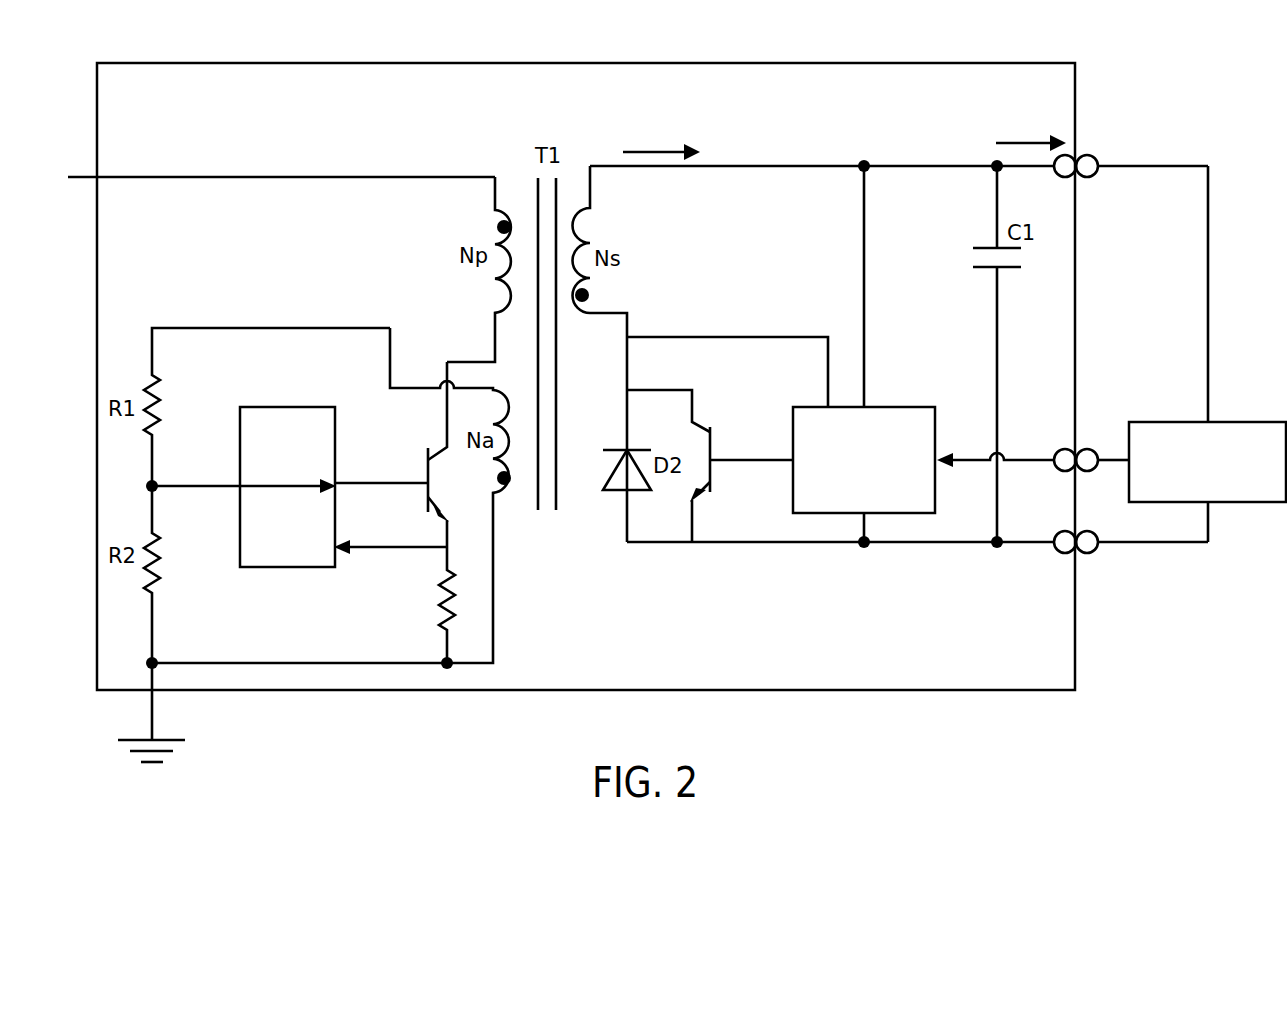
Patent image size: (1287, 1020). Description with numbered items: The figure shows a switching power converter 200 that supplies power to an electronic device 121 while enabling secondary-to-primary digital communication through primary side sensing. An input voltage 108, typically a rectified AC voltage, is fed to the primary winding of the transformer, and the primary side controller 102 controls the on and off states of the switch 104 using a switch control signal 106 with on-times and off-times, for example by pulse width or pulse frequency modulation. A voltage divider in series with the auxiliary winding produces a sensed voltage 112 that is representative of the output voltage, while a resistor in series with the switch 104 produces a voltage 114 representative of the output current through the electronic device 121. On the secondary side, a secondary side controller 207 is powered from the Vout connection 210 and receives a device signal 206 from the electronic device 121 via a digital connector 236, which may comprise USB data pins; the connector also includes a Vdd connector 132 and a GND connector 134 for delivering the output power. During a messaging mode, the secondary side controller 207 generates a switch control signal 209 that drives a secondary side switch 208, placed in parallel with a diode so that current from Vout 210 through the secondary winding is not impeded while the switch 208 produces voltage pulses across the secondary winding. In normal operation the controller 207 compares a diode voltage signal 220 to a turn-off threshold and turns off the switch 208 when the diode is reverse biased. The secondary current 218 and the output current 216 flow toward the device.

The switching power converter 200 is at (147, 99).
The input voltage 108 is at (89, 176).
The sensed voltage 112 is at (190, 486).
The primary side controller 102 is at (268, 542).
The switch control signal 106 is at (358, 483).
The switch 104 is at (425, 463).
The current sense voltage 114 is at (391, 547).
The secondary current ISEC 218 is at (670, 141).
The Vout connection 210 is at (930, 142).
The output current Iout 216 is at (1042, 134).
The Vdd connector 132 is at (1158, 144).
The diode voltage signal 220 is at (726, 337).
The secondary side switch 208 is at (735, 425).
The switch control signal 209 is at (756, 460).
The secondary side controller 207 is at (845, 502).
The device signal 206 is at (1010, 454).
The digital connector 236 is at (1090, 446).
The electronic device 121 is at (1190, 490).
The GND connector 134 is at (1096, 553).